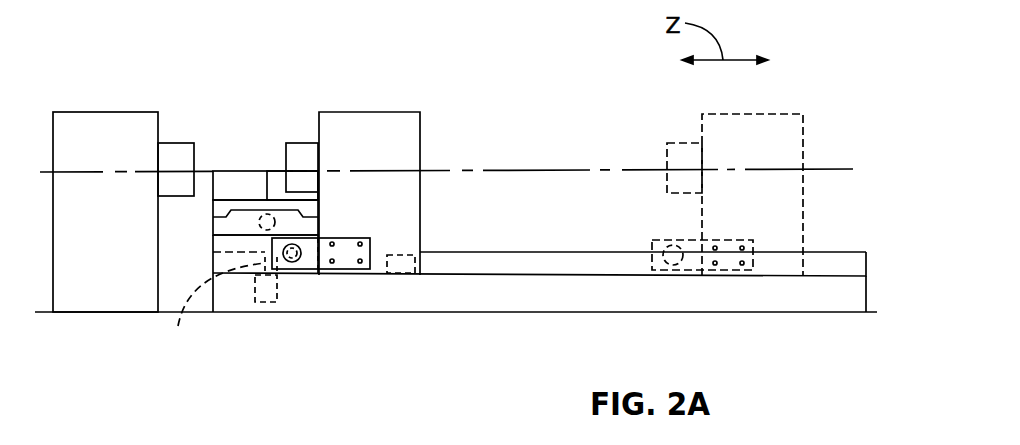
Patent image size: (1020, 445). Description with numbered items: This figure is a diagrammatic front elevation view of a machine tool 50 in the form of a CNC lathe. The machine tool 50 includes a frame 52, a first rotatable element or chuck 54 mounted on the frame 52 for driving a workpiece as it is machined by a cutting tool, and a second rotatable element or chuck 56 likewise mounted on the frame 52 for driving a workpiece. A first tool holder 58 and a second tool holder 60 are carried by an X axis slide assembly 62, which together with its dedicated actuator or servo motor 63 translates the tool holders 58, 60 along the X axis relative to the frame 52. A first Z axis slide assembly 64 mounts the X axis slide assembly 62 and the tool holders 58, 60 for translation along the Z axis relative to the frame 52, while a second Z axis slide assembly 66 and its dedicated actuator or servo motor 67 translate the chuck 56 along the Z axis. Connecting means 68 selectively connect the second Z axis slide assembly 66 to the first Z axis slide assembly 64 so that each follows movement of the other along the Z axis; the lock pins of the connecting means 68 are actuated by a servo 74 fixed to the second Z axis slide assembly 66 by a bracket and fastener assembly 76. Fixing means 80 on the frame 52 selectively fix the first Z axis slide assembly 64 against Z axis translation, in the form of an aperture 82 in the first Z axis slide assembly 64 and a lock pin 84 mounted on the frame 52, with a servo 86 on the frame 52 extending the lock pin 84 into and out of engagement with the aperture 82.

The machine tool 50 is at (455, 80).
The frame 52 is at (100, 312).
The first rotatable element or chuck 54 is at (178, 143).
The second rotatable element or chuck 56 is at (302, 143).
The first tool holder 58 is at (261, 150).
The second tool holder 60 is at (275, 178).
The X axis slide assembly 62 is at (242, 210).
The dedicated actuator or servo motor 63 is at (276, 223).
The first Z axis slide assembly 64 is at (213, 242).
The second Z axis slide assembly 66 is at (423, 248).
The dedicated actuator or servo motor 67 is at (425, 263).
The connecting means 68 is at (528, 305).
The servo 74 is at (292, 263).
The bracket and fastener assembly 76 is at (370, 274).
The fixing means 80 is at (251, 321).
The aperture 82 is at (205, 307).
The lock pin 84 is at (221, 294).
The servo 86 is at (272, 304).